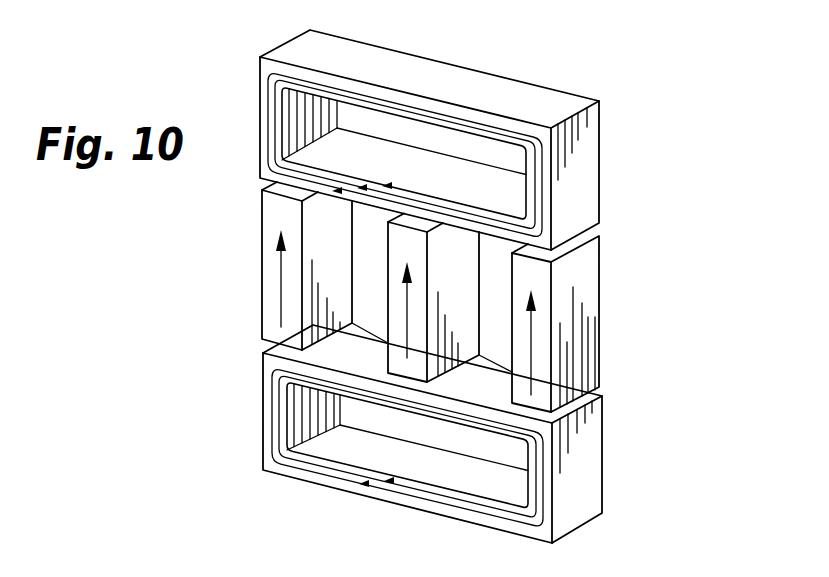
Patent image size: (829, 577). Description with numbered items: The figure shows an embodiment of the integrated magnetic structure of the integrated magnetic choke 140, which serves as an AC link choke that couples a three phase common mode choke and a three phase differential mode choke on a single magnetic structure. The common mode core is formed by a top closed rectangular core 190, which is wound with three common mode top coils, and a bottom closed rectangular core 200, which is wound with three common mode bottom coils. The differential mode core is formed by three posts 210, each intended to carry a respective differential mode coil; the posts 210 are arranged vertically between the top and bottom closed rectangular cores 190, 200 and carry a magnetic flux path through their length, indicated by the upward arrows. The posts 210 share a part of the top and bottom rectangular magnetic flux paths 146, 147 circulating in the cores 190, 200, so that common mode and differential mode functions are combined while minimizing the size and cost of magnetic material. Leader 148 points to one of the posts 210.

The integrated magnetic choke 140 is at (669, 31).
The top rectangular magnetic flux path 146 is at (283, 196).
The bottom rectangular magnetic flux path 147 is at (270, 426).
The core leg 148 is at (282, 306).
The top closed rectangular core 190 is at (587, 183).
The bottom closed rectangular core 200 is at (583, 453).
The posts 210 is at (588, 305).